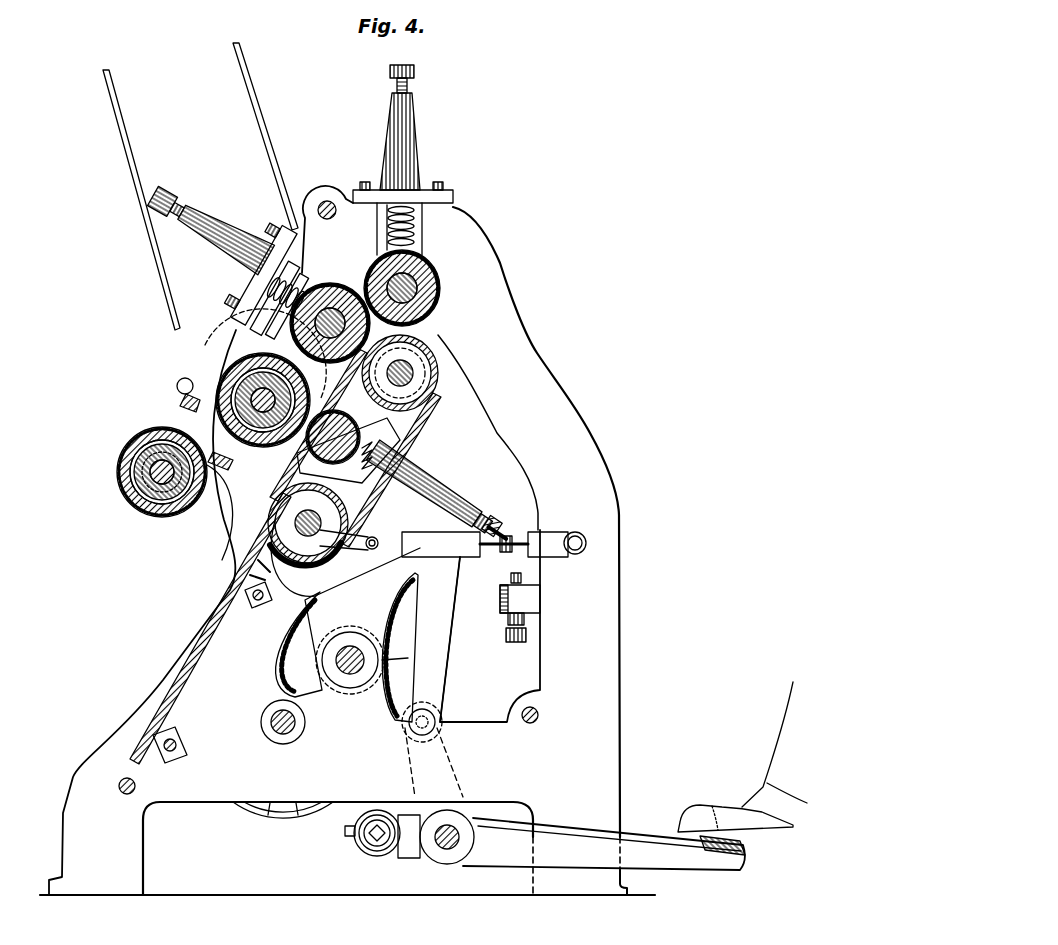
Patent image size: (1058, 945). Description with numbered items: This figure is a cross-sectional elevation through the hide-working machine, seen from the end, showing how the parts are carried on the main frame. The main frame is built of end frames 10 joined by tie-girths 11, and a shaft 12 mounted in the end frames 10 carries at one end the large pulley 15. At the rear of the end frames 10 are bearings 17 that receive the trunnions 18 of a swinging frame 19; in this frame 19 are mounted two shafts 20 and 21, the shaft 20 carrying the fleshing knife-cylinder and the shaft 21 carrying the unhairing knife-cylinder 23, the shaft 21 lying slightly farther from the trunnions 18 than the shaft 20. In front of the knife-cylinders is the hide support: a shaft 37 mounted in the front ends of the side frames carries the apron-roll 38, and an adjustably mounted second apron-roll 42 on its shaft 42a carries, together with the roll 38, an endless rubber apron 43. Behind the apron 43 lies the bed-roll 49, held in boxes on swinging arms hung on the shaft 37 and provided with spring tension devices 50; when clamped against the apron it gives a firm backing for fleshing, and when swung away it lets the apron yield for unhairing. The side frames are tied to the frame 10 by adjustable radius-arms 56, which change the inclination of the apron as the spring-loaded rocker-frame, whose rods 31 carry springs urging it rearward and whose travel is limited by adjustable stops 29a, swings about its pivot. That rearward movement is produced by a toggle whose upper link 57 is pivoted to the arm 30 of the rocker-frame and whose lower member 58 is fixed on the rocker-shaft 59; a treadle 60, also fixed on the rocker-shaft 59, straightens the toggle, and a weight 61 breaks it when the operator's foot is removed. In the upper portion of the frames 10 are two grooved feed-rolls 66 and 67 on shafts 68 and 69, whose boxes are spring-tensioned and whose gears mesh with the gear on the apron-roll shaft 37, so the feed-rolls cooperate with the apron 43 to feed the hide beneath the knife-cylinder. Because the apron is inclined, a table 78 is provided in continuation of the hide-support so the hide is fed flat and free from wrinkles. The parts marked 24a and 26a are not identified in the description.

The end frames 10 is at (612, 632).
The tie-girths 11 is at (327, 200).
The shaft 12 is at (295, 722).
The large pulley 15 is at (283, 812).
The bearings 17 is at (218, 512).
The trunnions 18 is at (178, 417).
The frame 19 is at (212, 407).
The shaft 20 is at (235, 462).
The shaft 21 is at (142, 506).
The knife-cylinder 23 is at (120, 474).
The guide rails 24a is at (262, 132).
The sector gear 26a is at (405, 620).
The adjustable stops 29a is at (521, 580).
The arm 30 is at (518, 495).
The rods 31 is at (490, 522).
The shaft 37 is at (415, 375).
The apron-roll 38 is at (430, 358).
The second apron-roll 42 is at (280, 533).
The shaft 42a is at (325, 560).
The endless apron 43 is at (430, 410).
The bed-roll 49 is at (345, 418).
The spring tension devices 50 is at (410, 460).
The adjustable radius-arms 56 is at (548, 537).
The upper toggle member 57 is at (448, 620).
The lower toggle member 58 is at (448, 752).
The rocker-shaft 59 is at (442, 850).
The treadle 60 is at (632, 845).
The weight 61 is at (364, 845).
The grooved feed-roll 66 is at (440, 286).
The grooved feed-roll 67 is at (330, 300).
The shaft 68 is at (420, 265).
The shaft 69 is at (287, 308).
The table 78 is at (210, 628).